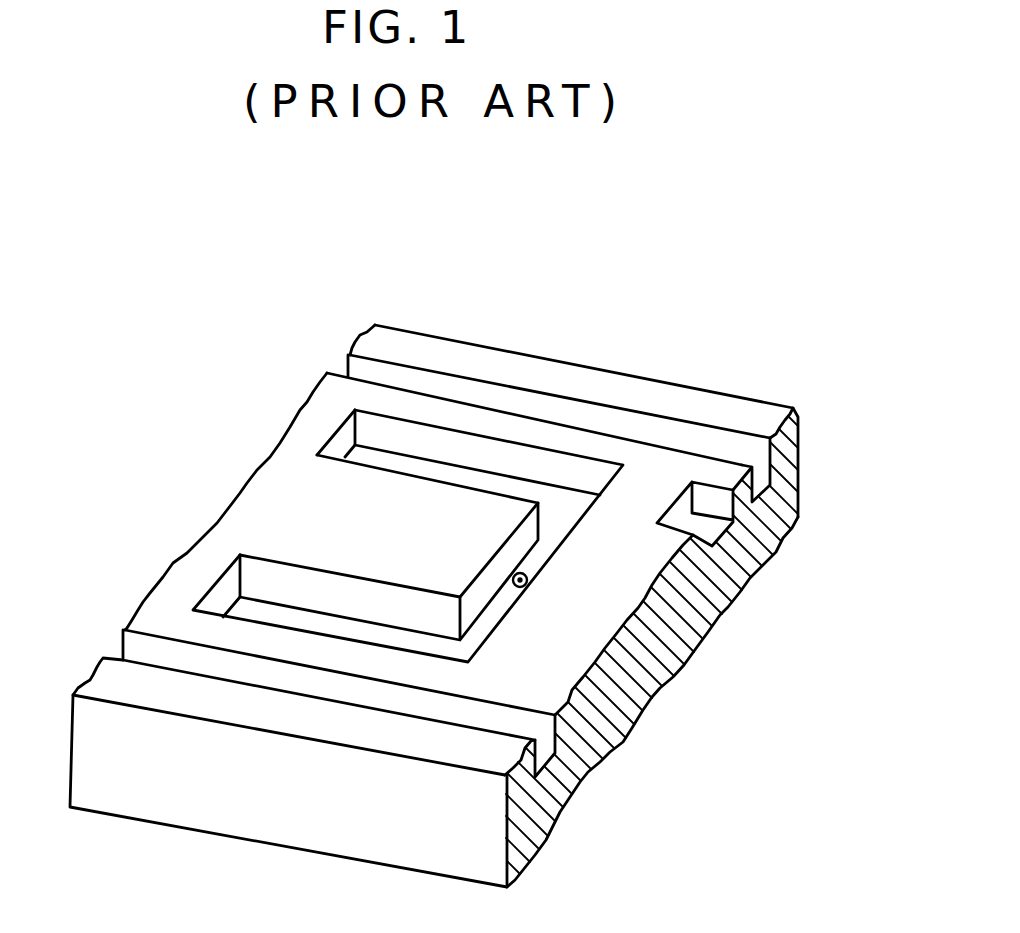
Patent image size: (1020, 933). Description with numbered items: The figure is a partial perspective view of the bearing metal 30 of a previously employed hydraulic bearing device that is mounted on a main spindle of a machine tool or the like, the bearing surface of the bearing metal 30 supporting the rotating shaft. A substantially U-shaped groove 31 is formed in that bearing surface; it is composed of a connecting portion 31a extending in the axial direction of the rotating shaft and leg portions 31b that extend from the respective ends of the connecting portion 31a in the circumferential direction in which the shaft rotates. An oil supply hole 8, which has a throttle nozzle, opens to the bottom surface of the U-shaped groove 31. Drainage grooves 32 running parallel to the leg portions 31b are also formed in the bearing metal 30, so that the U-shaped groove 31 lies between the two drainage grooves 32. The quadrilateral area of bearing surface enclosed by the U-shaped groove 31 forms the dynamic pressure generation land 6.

The dynamic pressure generation land 6 is at (348, 505).
The oil supply hole 8 is at (527, 584).
The bearing metal 30 is at (667, 667).
The substantially U-shaped groove 31 is at (848, 558).
The connecting portion 31a is at (543, 550).
The leg portions 31b is at (228, 597).
The drainage grooves 32 is at (623, 427).